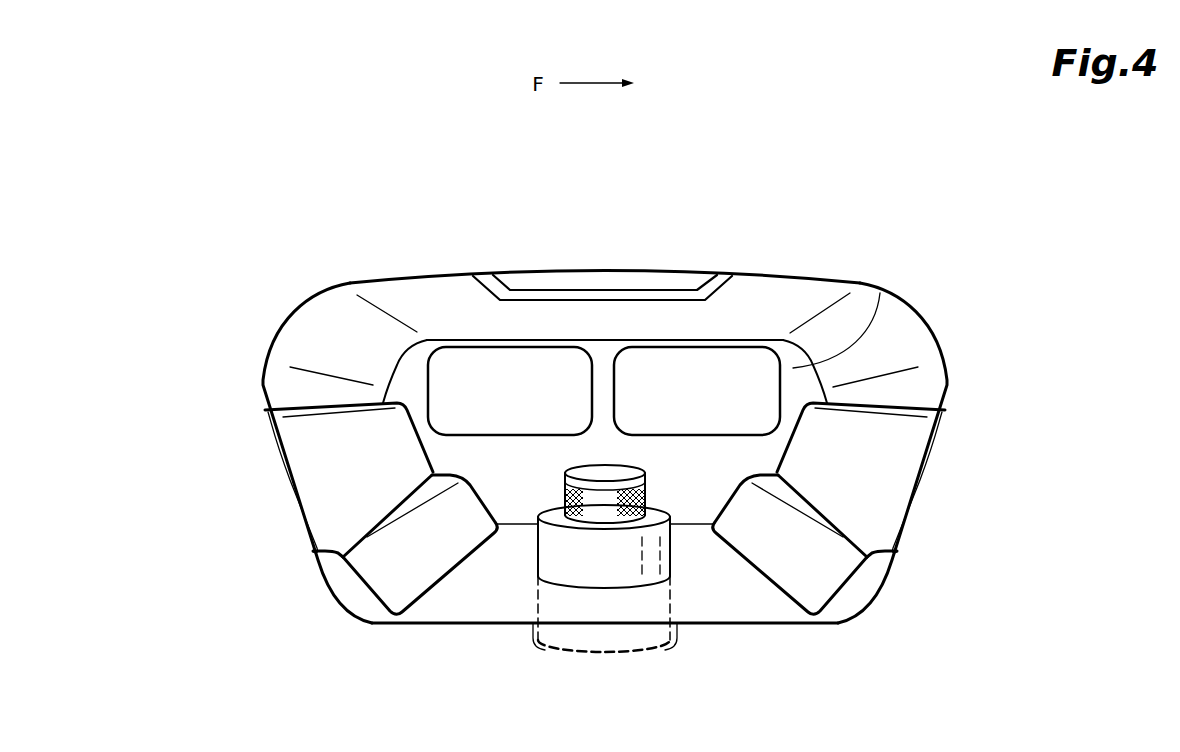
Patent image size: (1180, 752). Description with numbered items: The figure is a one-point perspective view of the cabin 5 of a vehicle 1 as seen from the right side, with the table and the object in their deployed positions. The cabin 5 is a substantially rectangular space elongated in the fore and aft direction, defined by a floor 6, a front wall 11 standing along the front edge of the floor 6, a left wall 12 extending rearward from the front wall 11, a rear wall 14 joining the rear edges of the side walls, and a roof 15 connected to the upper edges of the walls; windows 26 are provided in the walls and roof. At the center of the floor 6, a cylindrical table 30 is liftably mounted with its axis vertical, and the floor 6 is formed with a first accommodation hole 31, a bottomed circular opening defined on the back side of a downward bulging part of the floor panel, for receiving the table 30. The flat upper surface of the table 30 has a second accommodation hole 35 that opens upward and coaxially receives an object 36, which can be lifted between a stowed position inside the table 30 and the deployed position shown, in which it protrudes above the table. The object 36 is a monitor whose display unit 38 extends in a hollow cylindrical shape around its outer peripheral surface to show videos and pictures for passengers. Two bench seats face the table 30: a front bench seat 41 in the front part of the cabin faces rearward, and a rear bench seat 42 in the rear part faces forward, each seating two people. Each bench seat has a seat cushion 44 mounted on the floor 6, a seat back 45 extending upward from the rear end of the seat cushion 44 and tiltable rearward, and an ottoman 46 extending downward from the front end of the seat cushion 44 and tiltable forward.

The vehicle 1 is at (862, 190).
The cabin 5 is at (764, 299).
The floor 6 is at (483, 603).
The front wall 11 is at (920, 387).
The left wall 12 is at (878, 294).
The rear wall 14 is at (300, 397).
The roof 15 is at (436, 298).
The window 26 is at (510, 288).
The table 30 is at (657, 557).
The first accommodation hole 31 is at (580, 577).
The second accommodation hole 35 is at (623, 520).
The object 36 is at (587, 472).
The display unit 38 is at (573, 496).
The front bench seat 41 is at (934, 488).
The rear bench seat 42 is at (276, 488).
The seat cushion 44 is at (362, 523).
The seat back 45 is at (320, 442).
The ottoman 46 is at (407, 570).